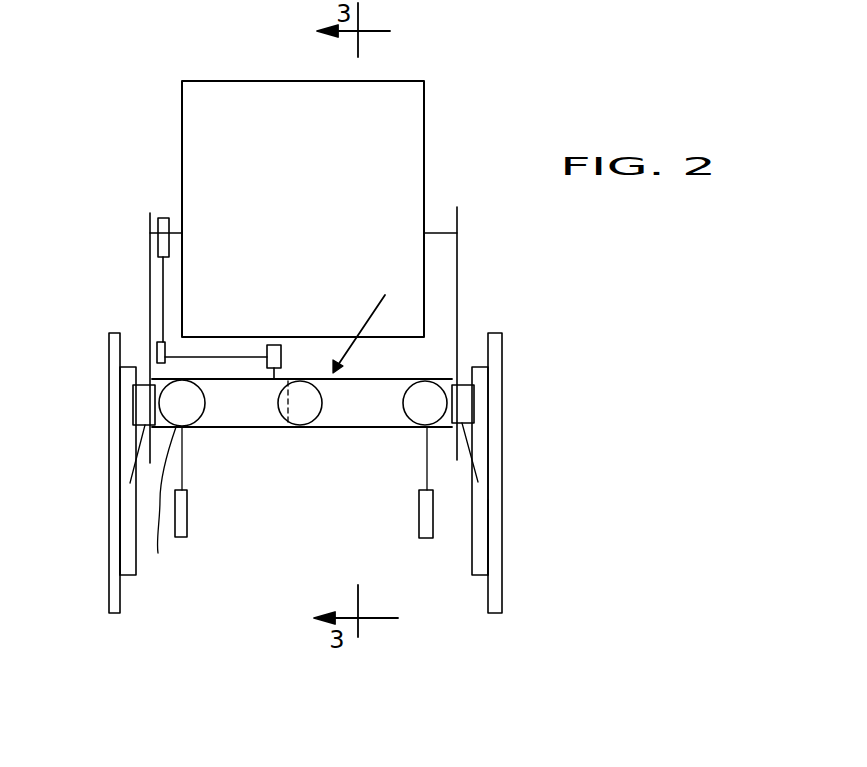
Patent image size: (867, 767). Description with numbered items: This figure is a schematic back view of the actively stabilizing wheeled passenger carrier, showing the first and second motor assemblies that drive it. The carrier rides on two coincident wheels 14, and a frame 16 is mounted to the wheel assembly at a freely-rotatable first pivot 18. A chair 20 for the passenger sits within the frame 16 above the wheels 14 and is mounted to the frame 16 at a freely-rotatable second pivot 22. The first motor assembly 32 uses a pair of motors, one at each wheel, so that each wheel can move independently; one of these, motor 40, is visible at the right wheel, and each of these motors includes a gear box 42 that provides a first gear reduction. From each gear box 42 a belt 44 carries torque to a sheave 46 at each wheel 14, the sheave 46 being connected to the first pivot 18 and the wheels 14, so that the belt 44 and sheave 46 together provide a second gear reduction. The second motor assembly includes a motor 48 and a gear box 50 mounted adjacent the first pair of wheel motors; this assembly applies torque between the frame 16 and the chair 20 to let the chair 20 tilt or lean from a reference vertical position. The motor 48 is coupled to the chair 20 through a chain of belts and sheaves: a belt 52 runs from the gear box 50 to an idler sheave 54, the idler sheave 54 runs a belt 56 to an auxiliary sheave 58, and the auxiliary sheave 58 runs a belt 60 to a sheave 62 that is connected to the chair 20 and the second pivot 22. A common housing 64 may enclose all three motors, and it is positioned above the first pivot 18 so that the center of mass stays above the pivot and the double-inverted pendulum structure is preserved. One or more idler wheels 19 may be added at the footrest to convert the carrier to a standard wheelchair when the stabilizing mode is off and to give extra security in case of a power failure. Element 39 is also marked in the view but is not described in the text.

The wheels 14 is at (115, 405).
The frame 16 is at (457, 250).
The first pivot 18 is at (137, 395).
The idler wheels 19 is at (188, 522).
The chair 20 is at (424, 124).
The second pivot 22 is at (150, 233).
The first motor assembly 32 is at (184, 470).
The cable 39 is at (165, 508).
The motor 40 is at (416, 411).
The gear box 42 is at (135, 415).
The belt 44 is at (128, 472).
The sheave 46 is at (124, 530).
The motor 48 is at (320, 408).
The gear box 50 is at (302, 376).
The belt 52 is at (282, 368).
The idler sheave 54 is at (275, 345).
The belt 56 is at (212, 357).
The auxiliary sheave 58 is at (165, 340).
The belt 60 is at (163, 285).
The sheave 62 is at (165, 225).
The common housing 64 is at (370, 318).